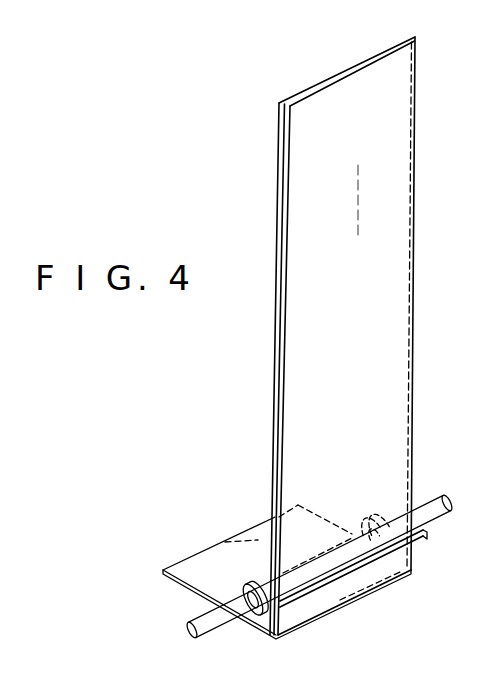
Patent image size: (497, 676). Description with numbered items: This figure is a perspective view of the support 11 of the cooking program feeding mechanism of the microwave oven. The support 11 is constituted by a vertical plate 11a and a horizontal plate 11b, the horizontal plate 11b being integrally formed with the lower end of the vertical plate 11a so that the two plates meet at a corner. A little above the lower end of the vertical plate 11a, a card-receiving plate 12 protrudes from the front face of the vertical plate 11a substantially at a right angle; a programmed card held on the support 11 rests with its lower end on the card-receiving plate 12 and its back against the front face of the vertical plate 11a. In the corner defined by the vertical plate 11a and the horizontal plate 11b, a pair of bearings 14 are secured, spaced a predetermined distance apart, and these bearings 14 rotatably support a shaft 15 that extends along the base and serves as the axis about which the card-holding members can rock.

The support 11 is at (288, 337).
The vertical plate 11a is at (297, 191).
The horizontal plate 11b is at (202, 558).
The card-receiving plate 12 is at (421, 539).
The bearings 14 is at (250, 581).
The shaft 15 is at (230, 623).